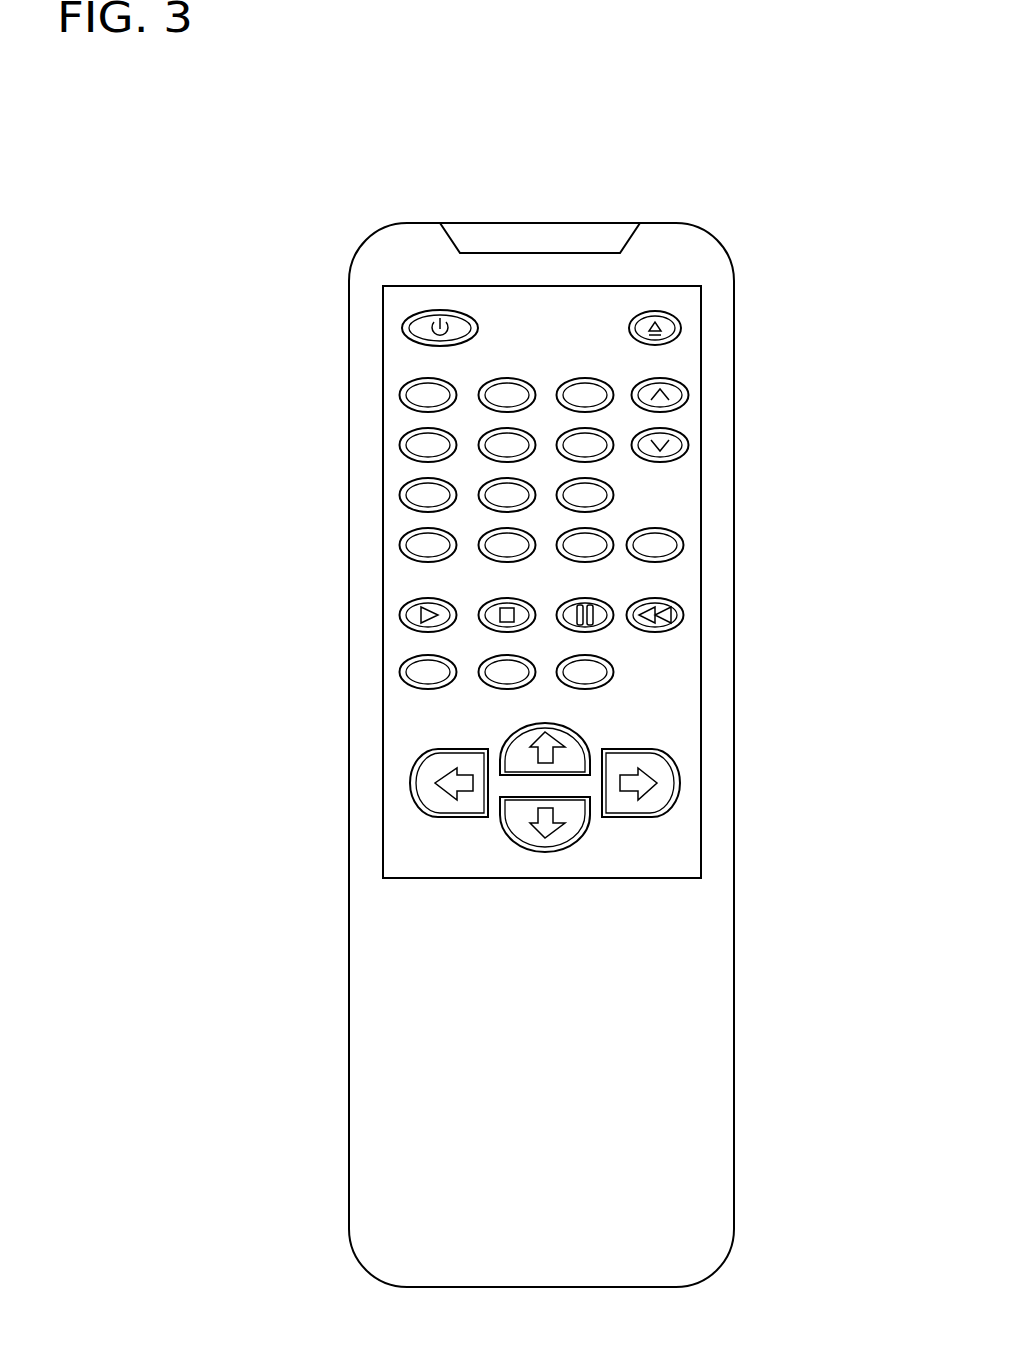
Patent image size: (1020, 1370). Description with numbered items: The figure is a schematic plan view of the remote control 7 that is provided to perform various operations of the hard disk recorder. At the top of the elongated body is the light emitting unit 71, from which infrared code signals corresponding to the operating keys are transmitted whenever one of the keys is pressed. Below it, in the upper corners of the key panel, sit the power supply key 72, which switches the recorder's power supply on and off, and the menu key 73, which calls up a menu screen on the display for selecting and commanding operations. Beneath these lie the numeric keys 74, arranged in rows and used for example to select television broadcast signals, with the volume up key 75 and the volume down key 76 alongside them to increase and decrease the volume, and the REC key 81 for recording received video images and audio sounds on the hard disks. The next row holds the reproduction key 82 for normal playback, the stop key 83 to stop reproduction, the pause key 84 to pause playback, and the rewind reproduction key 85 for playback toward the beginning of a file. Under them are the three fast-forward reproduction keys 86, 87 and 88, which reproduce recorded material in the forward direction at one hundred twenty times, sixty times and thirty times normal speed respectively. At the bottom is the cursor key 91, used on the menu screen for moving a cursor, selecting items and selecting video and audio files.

The remote control 7 is at (567, 70).
The light emitting unit 71 is at (558, 232).
The power supply key 72 is at (418, 325).
The menu key 73 is at (672, 325).
The numeric keys 74 is at (405, 367).
The volume up key 75 is at (672, 385).
The volume down key 76 is at (672, 440).
The REC key 81 is at (668, 530).
The reproduction key 82 is at (418, 612).
The stop key 83 is at (490, 620).
The pause key 84 is at (600, 606).
The rewind reproduction key 85 is at (672, 609).
The fast-forward reproduction key 86 is at (408, 682).
The fast-forward reproduction key 87 is at (488, 688).
The fast-forward reproduction key 88 is at (603, 677).
The cursor key 91 is at (405, 827).